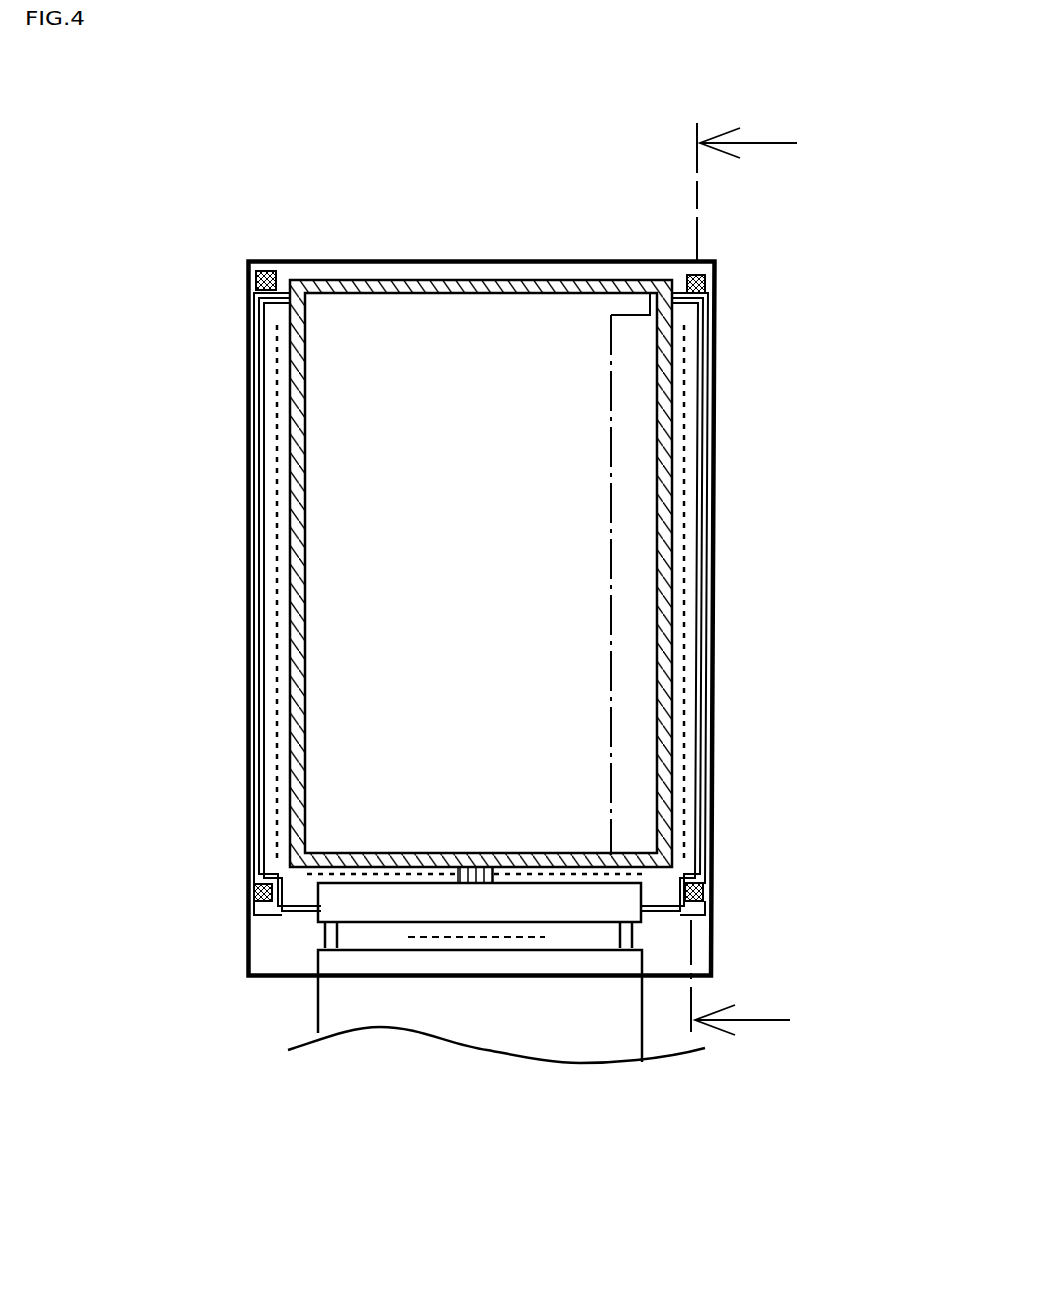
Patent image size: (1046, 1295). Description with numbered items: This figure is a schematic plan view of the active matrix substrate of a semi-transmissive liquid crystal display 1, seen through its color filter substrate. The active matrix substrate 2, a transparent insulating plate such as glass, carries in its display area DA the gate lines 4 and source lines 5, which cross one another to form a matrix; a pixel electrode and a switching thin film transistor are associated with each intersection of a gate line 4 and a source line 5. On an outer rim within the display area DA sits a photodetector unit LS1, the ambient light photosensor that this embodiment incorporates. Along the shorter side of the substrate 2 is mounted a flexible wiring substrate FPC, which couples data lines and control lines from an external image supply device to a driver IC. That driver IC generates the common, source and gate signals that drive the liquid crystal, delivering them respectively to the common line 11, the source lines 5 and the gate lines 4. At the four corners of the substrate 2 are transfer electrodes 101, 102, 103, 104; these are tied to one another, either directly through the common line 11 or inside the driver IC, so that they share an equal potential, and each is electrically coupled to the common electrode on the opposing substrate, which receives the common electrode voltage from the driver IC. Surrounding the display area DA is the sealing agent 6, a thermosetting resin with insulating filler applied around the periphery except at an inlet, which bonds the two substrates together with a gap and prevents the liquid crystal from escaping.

The liquid crystal display 1 is at (391, 150).
The active matrix substrate 2 is at (702, 945).
The gate line 4 is at (272, 523).
The source line 5 is at (462, 883).
The sealing agent 6 is at (658, 658).
The common line 11 is at (258, 385).
The transfer electrode 101 is at (703, 892).
The transfer electrode 102 is at (722, 268).
The transfer electrode 103 is at (263, 895).
The transfer electrode 104 is at (264, 270).
The display area DA is at (512, 604).
The photodetector unit LS1 is at (645, 294).
The driver IC is at (517, 900).
The flexible wiring substrate FPC is at (578, 990).